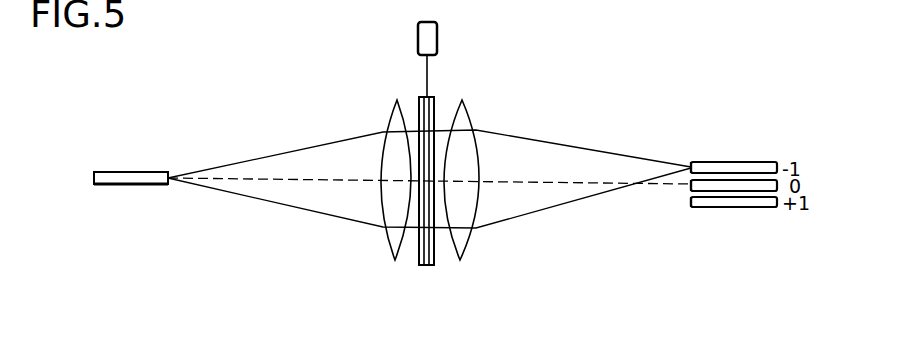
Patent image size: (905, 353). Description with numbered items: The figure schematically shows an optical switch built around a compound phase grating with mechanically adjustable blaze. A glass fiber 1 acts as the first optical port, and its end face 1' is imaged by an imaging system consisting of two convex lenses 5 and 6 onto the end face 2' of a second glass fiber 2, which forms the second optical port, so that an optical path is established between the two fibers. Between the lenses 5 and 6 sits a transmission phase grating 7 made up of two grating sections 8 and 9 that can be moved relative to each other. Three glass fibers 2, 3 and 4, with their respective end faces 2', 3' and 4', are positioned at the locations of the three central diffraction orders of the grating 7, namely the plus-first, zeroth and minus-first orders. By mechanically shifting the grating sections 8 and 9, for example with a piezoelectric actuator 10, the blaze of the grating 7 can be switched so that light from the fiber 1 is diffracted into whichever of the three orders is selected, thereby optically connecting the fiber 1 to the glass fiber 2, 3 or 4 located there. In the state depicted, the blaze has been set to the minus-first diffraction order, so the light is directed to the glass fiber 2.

The glass fiber 1 is at (131, 162).
The end face 1' is at (156, 196).
The glass fiber 2 is at (734, 148).
The end face 2' is at (668, 148).
The glass fiber 3 is at (734, 208).
The end face 3' is at (659, 200).
The glass fiber 4 is at (734, 217).
The end face 4' is at (677, 216).
The convex lens 5 is at (388, 118).
The convex lens 6 is at (469, 108).
The transmission phase grating 7 is at (427, 179).
The grating section 8 is at (421, 263).
The grating section 9 is at (436, 263).
The piezoelectric actuator 10 is at (418, 40).